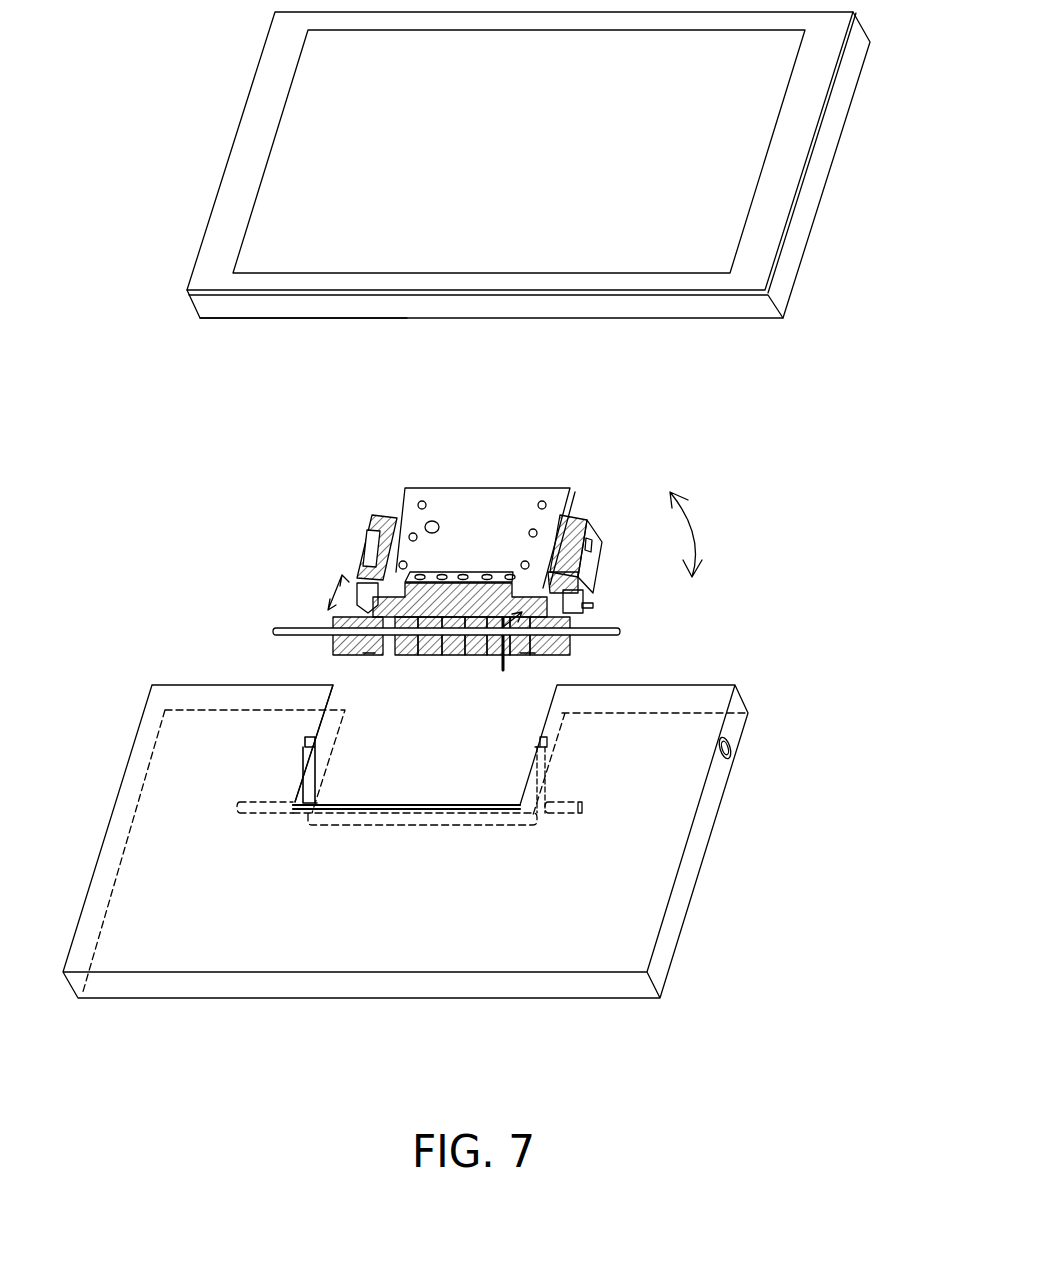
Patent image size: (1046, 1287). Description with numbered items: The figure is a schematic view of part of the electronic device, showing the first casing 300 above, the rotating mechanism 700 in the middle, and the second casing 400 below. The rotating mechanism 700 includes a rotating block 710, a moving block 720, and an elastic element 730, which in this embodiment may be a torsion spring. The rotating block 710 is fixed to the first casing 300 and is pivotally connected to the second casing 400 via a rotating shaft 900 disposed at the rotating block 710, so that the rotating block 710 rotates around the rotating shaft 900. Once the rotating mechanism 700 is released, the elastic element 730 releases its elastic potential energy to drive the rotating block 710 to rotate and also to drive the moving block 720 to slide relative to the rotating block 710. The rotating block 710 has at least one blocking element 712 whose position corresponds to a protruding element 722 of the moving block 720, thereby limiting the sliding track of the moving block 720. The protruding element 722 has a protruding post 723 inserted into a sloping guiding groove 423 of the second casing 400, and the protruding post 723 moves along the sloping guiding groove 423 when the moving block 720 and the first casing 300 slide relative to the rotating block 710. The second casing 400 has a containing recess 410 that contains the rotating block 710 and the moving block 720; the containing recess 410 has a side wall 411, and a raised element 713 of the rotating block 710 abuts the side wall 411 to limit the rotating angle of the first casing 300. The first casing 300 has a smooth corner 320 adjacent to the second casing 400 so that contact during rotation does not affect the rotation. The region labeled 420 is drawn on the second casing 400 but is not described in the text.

The first casing 300 is at (235, 203).
The smooth corner 320 is at (758, 306).
The second casing 400 is at (735, 718).
The containing recess 410 is at (375, 790).
The side wall 411 is at (438, 790).
The recess of base 420 is at (255, 785).
The sloping guiding groove 423 is at (309, 720).
The rotating mechanism 700 is at (578, 425).
The rotating block 710 is at (527, 565).
The blocking element 712 is at (372, 518).
The raised element 713 is at (368, 657).
The moving block 720 is at (423, 493).
The protruding element 722 is at (358, 587).
The protruding post 723 is at (595, 605).
The elastic element 730 is at (505, 600).
The rotating shaft 900 is at (275, 630).